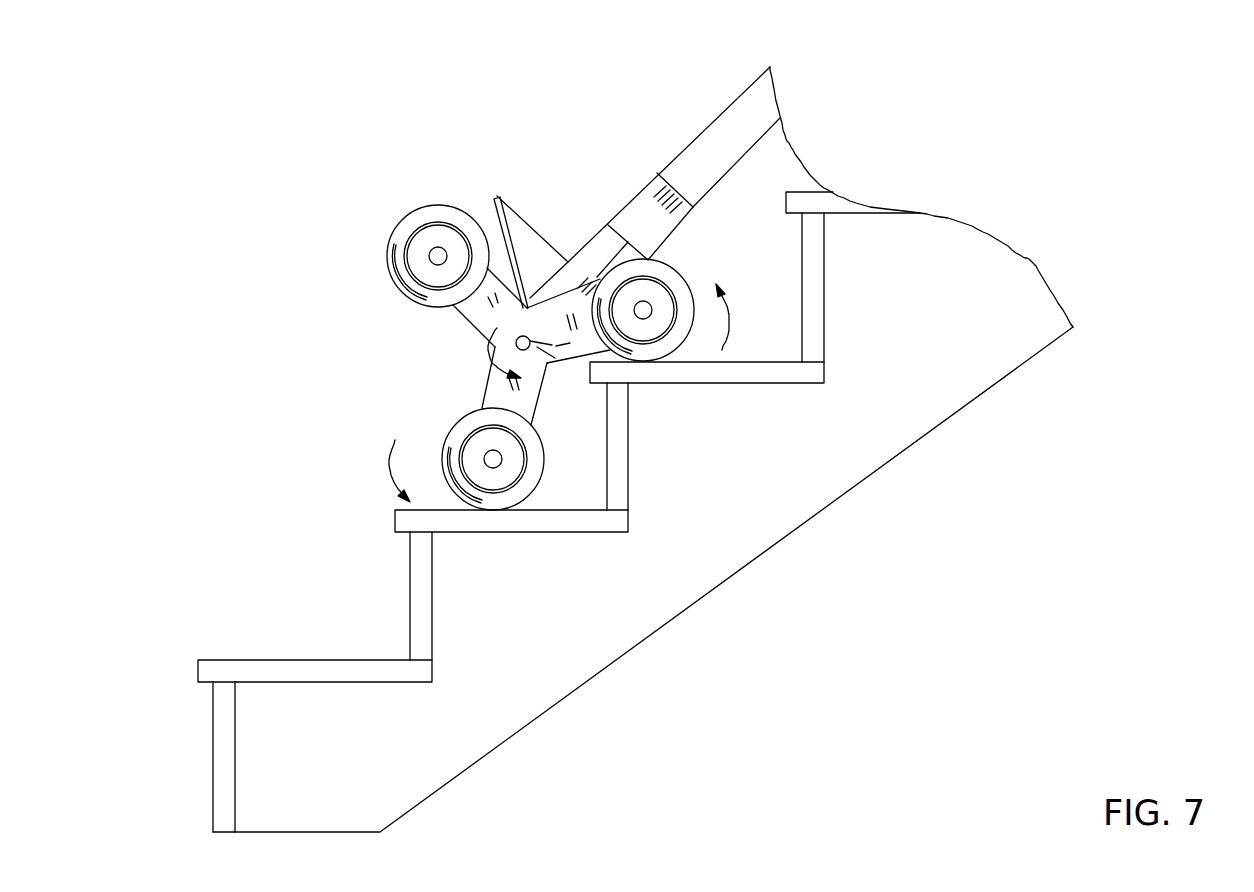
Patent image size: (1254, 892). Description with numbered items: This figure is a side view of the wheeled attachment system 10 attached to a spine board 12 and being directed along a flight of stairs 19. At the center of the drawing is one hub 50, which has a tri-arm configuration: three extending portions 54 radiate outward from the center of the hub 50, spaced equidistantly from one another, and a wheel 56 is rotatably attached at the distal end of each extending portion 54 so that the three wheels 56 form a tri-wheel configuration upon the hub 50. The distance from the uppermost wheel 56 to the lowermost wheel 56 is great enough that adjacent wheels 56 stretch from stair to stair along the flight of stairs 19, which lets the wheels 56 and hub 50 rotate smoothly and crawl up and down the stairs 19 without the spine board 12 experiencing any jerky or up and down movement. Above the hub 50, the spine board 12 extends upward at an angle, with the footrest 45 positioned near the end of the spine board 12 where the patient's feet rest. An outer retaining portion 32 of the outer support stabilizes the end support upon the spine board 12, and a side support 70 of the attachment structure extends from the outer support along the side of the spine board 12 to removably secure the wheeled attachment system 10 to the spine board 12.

The wheeled attachment system 10 is at (285, 146).
The spine board 12 is at (720, 138).
The flight of stairs 19 is at (767, 502).
The outer retaining portion 32 is at (555, 365).
The footrest 45 is at (510, 191).
The hub 50 is at (465, 346).
The extending portion 54 is at (473, 317).
The wheel 56 is at (520, 493).
The side support 70 is at (623, 218).